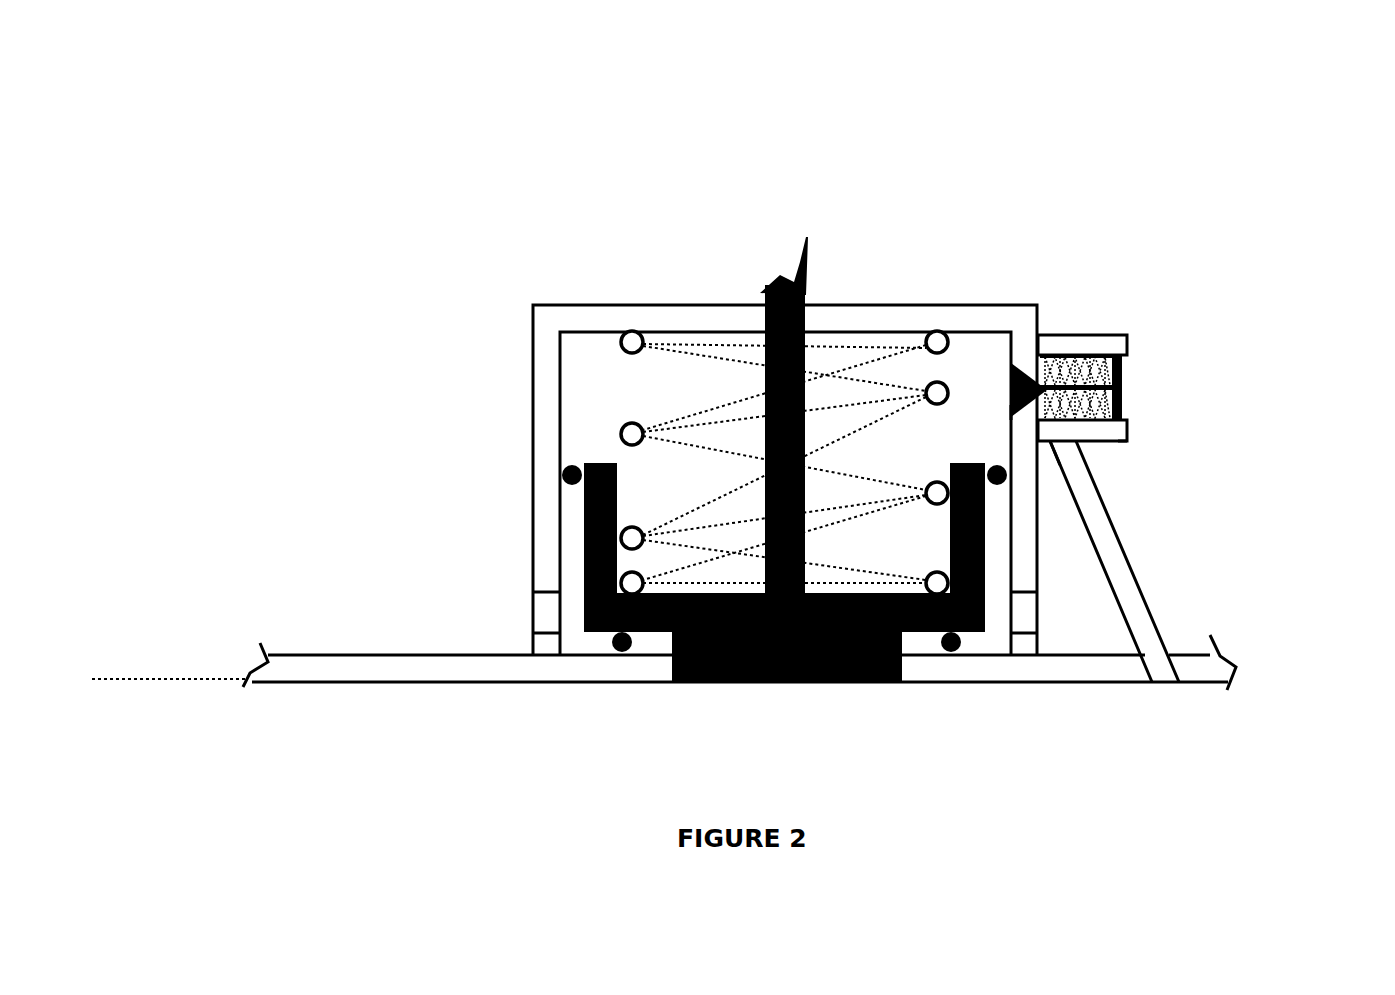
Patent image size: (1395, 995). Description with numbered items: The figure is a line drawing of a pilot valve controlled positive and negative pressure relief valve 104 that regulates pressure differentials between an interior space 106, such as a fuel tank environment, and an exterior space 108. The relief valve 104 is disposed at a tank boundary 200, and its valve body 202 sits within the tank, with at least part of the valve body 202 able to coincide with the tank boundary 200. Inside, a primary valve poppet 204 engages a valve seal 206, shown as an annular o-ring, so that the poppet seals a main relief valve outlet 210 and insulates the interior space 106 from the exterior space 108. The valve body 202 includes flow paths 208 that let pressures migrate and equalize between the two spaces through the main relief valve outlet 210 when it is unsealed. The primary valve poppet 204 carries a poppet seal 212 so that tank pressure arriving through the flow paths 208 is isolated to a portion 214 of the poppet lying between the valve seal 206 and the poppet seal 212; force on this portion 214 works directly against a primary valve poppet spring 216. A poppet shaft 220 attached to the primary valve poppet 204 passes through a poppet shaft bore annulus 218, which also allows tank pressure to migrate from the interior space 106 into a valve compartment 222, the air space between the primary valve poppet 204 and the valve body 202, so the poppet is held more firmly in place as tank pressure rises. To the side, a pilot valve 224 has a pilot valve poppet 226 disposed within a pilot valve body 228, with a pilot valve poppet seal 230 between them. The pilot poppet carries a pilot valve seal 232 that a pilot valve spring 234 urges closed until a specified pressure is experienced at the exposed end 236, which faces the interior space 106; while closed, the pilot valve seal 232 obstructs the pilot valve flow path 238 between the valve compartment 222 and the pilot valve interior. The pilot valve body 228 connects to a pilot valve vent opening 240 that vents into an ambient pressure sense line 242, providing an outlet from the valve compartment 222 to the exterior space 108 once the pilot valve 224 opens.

The relief valve 104 is at (1030, 146).
The interior space 106 is at (1176, 222).
The exterior space 108 is at (1176, 764).
The tank boundary 200 is at (205, 678).
The valve body 202 is at (992, 325).
The primary valve poppet 204 is at (780, 684).
The valve seal 206 is at (618, 656).
The flow paths 208 is at (544, 615).
The main relief valve outlet 210 is at (902, 690).
The poppet seal 212 is at (563, 475).
The portion of the primary valve poppet 214 is at (598, 639).
The primary valve poppet spring 216 is at (624, 332).
The poppet shaft bore annulus 218 is at (812, 287).
The poppet shaft 220 is at (770, 285).
The valve compartment 222 is at (606, 390).
The pilot valve 224 is at (1204, 391).
The pilot valve poppet 226 is at (1122, 408).
The pilot valve body 228 is at (1125, 437).
The pilot valve poppet seal 230 is at (1122, 432).
The pilot valve seal 232 is at (1010, 385).
The pilot valve spring 234 is at (1080, 355).
The exposed end 236 is at (1130, 386).
The pilot valve flow path 238 is at (1003, 424).
The pilot valve vent opening 240 is at (1068, 426).
The ambient pressure sense line 242 is at (1115, 555).